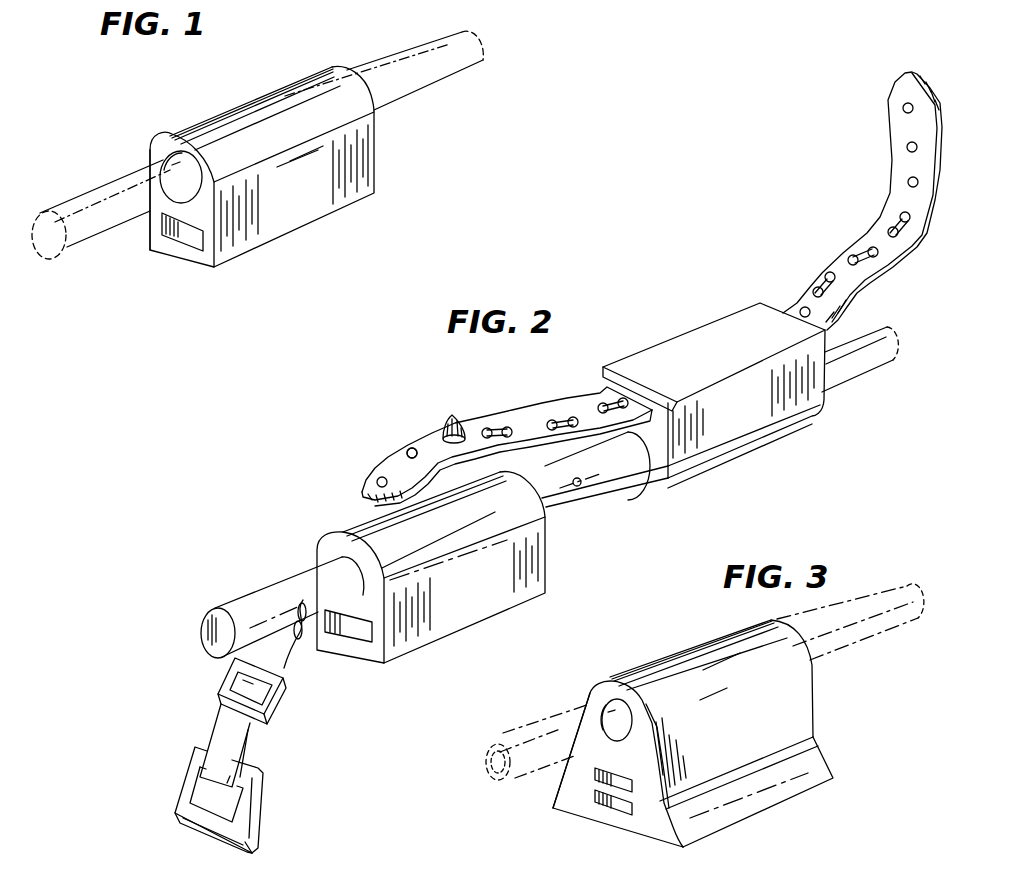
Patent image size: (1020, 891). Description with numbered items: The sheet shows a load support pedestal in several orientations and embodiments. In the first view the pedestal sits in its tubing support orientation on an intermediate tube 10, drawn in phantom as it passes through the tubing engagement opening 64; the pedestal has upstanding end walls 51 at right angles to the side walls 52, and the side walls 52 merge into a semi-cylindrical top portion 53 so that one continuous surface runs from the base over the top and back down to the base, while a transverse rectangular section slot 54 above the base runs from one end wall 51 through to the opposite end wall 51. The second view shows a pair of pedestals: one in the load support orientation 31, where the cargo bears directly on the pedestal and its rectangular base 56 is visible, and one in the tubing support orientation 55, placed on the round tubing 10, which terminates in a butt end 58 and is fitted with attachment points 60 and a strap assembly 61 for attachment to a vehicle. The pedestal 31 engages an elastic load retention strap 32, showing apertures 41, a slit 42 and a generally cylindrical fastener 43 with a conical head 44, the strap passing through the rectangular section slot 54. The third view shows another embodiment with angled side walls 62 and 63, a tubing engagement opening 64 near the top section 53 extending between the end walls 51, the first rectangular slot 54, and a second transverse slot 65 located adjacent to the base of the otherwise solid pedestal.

In FIG. 1, the intermediate tube 10 is at (416, 38).
In FIG. 3, the intermediate tube 10 is at (540, 733).
In FIG. 2, the load support orientation 31 is at (745, 422).
In FIG. 2, the elastic load retention strap 32 is at (900, 196).
In FIG. 2, the apertures 41 is at (410, 452).
In FIG. 2, the slit 42 is at (497, 428).
In FIG. 2, the generally cylindrical fastener 43 is at (443, 440).
In FIG. 2, the conical head 44 is at (453, 418).
In FIG. 1, the end walls 51 is at (156, 198).
In FIG. 3, the end walls 51 is at (656, 815).
In FIG. 1, the side walls 52 is at (322, 192).
In FIG. 2, the side walls 52 is at (805, 400).
In FIG. 1, the semi-cylindrical top portion 53 is at (236, 110).
In FIG. 3, the semi-cylindrical top portion 53 is at (700, 665).
In FIG. 1, the rectangular section slot 54 is at (188, 238).
In FIG. 2, the rectangular section slot 54 is at (652, 432).
In FIG. 3, the rectangular section slot 54 is at (596, 718).
In FIG. 2, the tubing support orientation 55 is at (546, 556).
In FIG. 2, the rectangular base 56 is at (727, 332).
In FIG. 2, the butt end 58 is at (207, 615).
In FIG. 2, the attachment points 60 is at (300, 638).
In FIG. 2, the strap assembly 61 is at (222, 735).
In FIG. 3, the angled side wall 62 is at (795, 695).
In FIG. 3, the angled side wall 63 is at (795, 780).
In FIG. 1, the tubing engagement opening 64 is at (160, 164).
In FIG. 3, the second transverse slot 65 is at (606, 812).